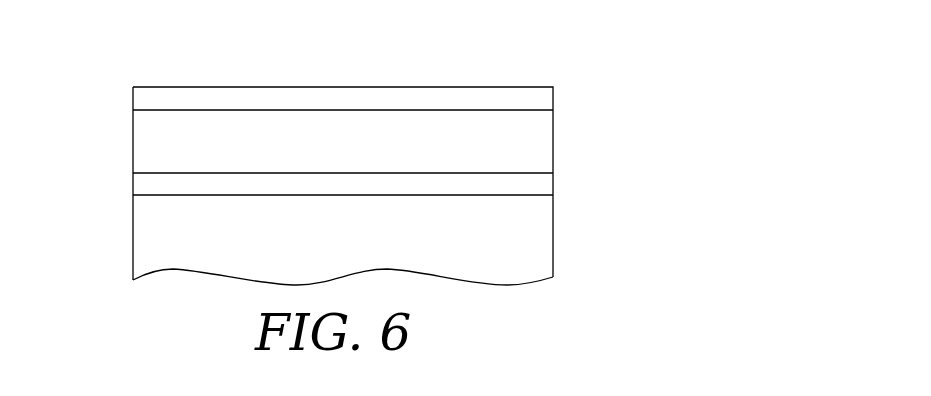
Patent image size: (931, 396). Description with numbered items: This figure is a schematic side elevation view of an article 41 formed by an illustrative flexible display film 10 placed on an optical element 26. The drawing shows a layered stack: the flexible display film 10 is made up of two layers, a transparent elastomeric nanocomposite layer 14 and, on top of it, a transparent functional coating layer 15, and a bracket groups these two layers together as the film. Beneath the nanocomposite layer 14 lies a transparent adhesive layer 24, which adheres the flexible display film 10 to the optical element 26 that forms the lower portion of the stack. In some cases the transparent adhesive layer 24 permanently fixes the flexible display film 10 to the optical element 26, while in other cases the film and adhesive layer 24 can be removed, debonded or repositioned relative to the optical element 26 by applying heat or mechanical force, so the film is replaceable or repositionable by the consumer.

The flexible display film 10 is at (341, 130).
The transparent elastomeric nanocomposite layer 14 is at (363, 161).
The transparent functional coating layer 15 is at (553, 99).
The transparent adhesive layer 24 is at (553, 178).
The optical element 26 is at (553, 241).
The article 41 is at (341, 150).